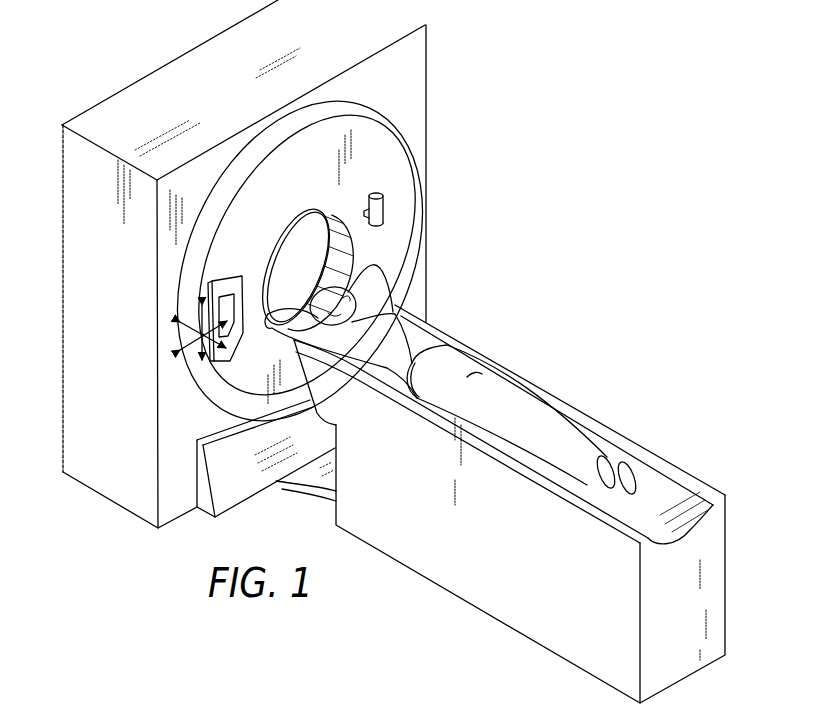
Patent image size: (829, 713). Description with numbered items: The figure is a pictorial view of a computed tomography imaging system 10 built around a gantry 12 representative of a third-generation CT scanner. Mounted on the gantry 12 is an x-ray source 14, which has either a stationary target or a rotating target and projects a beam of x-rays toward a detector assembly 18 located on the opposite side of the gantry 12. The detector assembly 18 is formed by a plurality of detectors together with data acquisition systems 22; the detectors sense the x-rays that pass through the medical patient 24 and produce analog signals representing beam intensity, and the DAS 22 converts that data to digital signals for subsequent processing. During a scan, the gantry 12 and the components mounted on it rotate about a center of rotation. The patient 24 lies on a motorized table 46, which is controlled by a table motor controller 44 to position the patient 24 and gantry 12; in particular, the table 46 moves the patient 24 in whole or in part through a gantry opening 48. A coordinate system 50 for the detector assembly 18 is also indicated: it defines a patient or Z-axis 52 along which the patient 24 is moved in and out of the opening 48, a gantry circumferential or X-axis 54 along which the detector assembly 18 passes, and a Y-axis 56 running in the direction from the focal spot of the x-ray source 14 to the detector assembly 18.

The computed tomography (CT) imaging system 10 is at (393, 356).
The gantry 12 is at (400, 178).
The x-ray source 14 is at (386, 212).
The detector assembly 18 is at (237, 307).
The data acquisition systems (DAS) 22 is at (229, 297).
The medical patient 24 is at (423, 341).
The table motor controller 44 is at (509, 509).
The motorized table 46 is at (548, 628).
The gantry opening 48 is at (299, 250).
The coordinate system 50 is at (186, 338).
The Z-axis 52 is at (174, 312).
The X-axis 54 is at (196, 293).
The Y-axis 56 is at (180, 362).